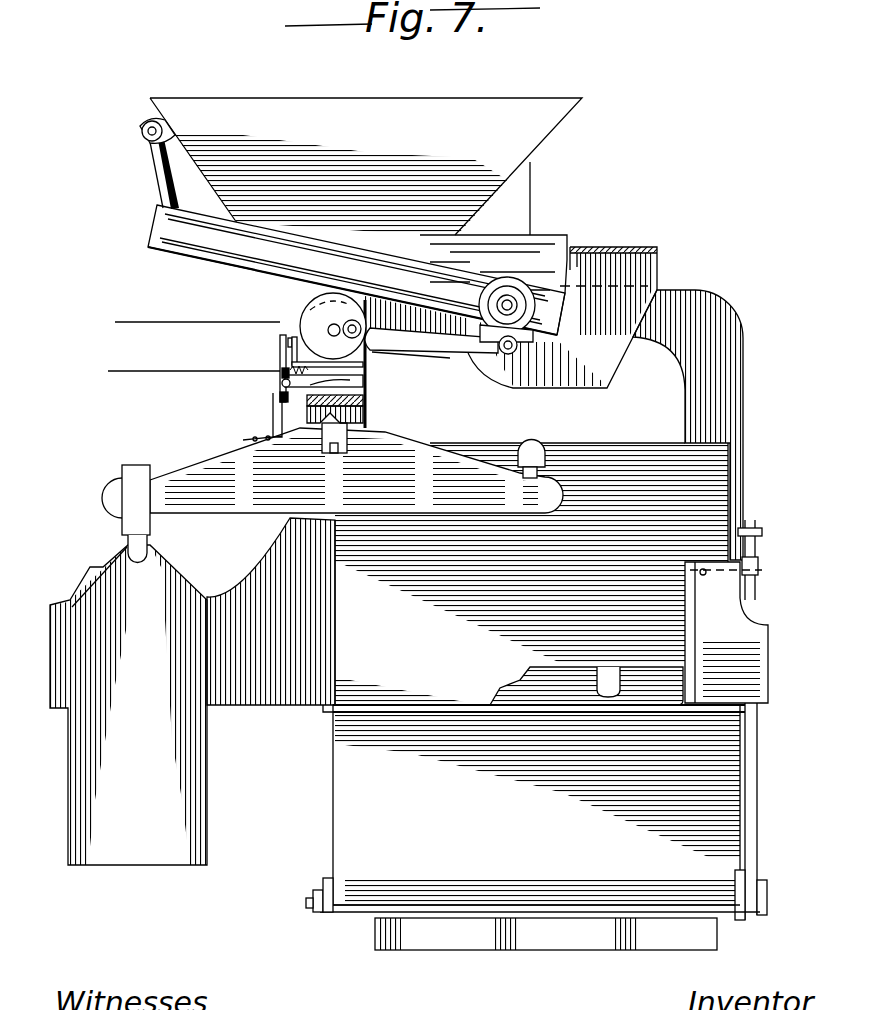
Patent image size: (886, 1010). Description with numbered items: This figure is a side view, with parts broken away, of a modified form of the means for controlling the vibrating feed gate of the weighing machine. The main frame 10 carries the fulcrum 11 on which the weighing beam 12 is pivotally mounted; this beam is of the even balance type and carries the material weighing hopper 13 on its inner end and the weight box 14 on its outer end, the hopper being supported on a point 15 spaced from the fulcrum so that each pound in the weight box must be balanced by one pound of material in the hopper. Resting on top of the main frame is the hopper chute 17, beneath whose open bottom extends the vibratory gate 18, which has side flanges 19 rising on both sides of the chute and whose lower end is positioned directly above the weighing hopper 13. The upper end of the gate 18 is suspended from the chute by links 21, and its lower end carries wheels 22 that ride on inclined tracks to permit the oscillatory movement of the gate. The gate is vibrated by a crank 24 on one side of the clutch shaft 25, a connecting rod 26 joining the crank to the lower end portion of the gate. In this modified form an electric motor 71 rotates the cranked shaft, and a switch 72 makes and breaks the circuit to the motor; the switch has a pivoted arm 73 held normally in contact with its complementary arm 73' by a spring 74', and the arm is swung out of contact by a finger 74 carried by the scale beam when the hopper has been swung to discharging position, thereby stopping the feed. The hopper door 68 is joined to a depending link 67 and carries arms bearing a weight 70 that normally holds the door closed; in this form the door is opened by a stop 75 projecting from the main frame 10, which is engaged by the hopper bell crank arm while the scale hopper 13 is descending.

The main frame 10 is at (525, 708).
The fulcrum 11 is at (330, 462).
The weighing beam 12 is at (366, 484).
The material weighing hopper 13 is at (395, 785).
The weight box 14 is at (120, 805).
The point 15 is at (532, 478).
The hopper chute 17 is at (458, 127).
The vibratory gate 18 is at (168, 258).
The side flanges 19 is at (181, 221).
The links 21 is at (160, 176).
The wheels 22 is at (512, 291).
The crank 24 is at (380, 362).
The clutch shaft 25 is at (385, 356).
The connecting rod 26 is at (427, 338).
The depending link 67 is at (758, 729).
The hopper door 68 is at (512, 925).
The weight 70 is at (645, 935).
The electric motor 71 is at (314, 305).
The switch 72 is at (280, 380).
The pivoted arm 73 is at (321, 412).
The complementary arm 73' is at (203, 362).
The finger 74 is at (258, 419).
The spring 74' is at (235, 355).
The stop 75 is at (760, 576).